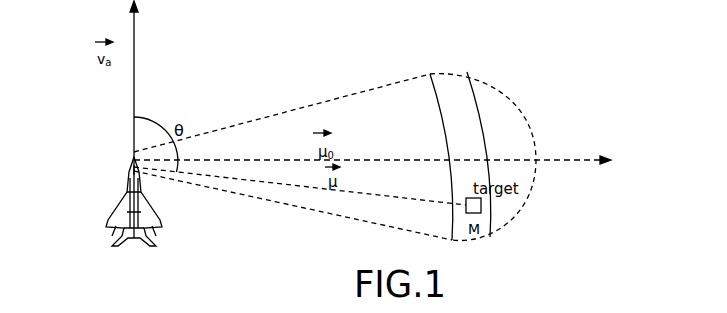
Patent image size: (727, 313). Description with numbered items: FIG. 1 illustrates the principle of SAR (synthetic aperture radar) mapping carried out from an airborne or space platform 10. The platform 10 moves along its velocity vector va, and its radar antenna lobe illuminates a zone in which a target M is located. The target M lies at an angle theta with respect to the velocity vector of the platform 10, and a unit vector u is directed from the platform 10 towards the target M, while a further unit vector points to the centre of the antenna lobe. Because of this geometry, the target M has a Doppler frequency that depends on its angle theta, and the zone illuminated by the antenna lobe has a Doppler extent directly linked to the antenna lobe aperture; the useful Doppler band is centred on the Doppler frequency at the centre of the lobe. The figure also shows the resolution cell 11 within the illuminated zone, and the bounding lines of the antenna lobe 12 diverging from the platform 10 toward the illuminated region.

The platform 10 is at (112, 208).
The resolution cell 11 is at (470, 125).
The radar detection cone 12 is at (315, 100).